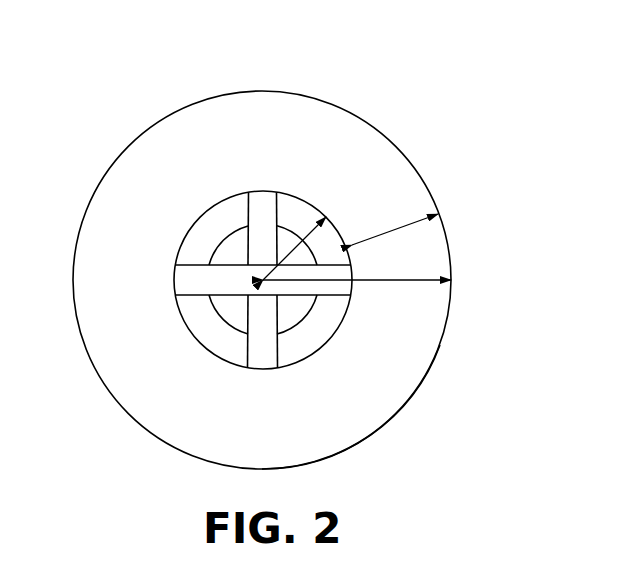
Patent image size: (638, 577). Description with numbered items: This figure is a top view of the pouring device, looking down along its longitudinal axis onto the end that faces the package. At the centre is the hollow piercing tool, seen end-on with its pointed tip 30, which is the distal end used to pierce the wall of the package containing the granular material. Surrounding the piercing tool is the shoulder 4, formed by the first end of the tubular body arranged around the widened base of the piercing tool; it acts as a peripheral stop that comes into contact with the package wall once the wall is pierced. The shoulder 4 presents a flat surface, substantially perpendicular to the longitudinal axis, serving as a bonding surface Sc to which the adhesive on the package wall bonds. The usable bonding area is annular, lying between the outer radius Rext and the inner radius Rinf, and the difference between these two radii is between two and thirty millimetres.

The pointed tip 30 is at (263, 280).
The shoulder 4 is at (423, 355).
The bonding surface Sc is at (388, 387).
The inner radius Rinf is at (293, 230).
The outer radius Rext is at (388, 282).